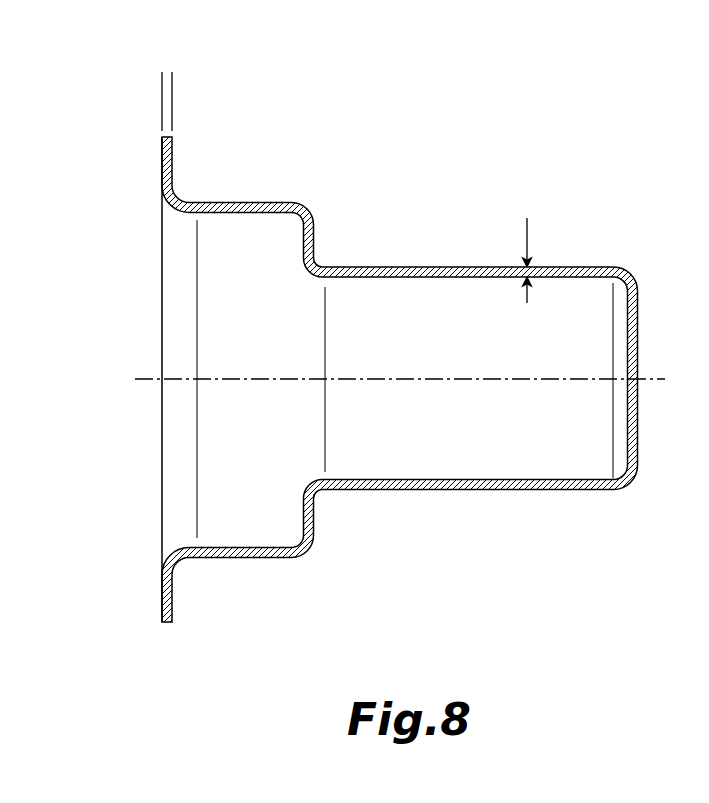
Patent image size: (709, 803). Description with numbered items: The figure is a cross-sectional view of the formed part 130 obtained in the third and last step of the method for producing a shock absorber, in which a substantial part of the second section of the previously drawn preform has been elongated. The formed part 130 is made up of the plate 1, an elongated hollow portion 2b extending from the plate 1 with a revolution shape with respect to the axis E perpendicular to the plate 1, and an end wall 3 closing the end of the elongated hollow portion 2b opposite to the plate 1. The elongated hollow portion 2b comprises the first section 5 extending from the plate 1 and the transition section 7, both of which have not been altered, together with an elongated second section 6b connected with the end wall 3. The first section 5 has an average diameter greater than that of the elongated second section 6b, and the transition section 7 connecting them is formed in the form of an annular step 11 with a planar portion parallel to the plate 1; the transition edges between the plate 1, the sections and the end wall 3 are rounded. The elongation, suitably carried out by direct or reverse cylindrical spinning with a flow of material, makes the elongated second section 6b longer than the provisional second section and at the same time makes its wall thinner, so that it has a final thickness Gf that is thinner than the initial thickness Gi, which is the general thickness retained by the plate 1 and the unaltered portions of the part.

The plate 1 is at (166, 164).
The end wall 3 is at (637, 330).
The first section 5 is at (307, 127).
The elongated second section 6b is at (628, 127).
The transition section 7 is at (328, 227).
The annular step 11 is at (319, 518).
The formed part 130 is at (497, 542).
The elongated hollow portion 2b is at (633, 629).
The initial thickness Gi is at (197, 78).
The final thickness Gf is at (544, 260).
The axis E is at (265, 378).